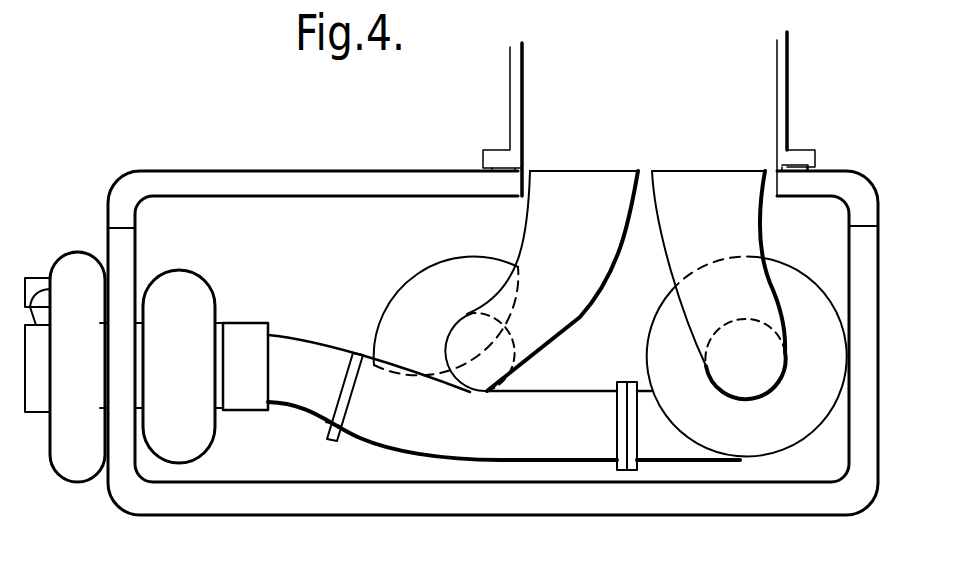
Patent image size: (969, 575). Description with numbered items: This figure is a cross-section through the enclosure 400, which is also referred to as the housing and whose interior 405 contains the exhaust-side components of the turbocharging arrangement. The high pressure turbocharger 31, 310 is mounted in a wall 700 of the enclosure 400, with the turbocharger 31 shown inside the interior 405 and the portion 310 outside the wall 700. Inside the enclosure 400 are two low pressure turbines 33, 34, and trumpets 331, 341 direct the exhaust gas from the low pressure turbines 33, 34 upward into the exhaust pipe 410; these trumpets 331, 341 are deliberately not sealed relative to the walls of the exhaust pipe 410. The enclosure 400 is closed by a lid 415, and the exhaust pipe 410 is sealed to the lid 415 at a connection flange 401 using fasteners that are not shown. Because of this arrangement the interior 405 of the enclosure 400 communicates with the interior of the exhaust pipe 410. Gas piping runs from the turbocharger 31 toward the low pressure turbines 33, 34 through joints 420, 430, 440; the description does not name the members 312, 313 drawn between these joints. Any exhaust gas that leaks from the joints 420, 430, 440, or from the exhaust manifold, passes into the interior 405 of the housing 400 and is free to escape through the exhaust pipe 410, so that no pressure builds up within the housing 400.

The enclosure 400 is at (187, 155).
The lid 415 is at (287, 188).
The wall 700 is at (118, 258).
The interior 405 is at (333, 270).
The low pressure turbine 33 is at (442, 290).
The trumpet 331 is at (594, 228).
The low pressure turbine 34 is at (788, 293).
The trumpet 341 is at (729, 232).
The exhaust pipe 410 is at (780, 95).
The connection flange 401 is at (797, 165).
The high pressure turbocharger 310 is at (75, 460).
The high pressure turbocharger 31 is at (176, 453).
The joint 420 is at (250, 398).
The first air duct 312 is at (307, 402).
The joint 430 is at (327, 426).
The second air duct 313 is at (595, 442).
The joint 440 is at (628, 470).